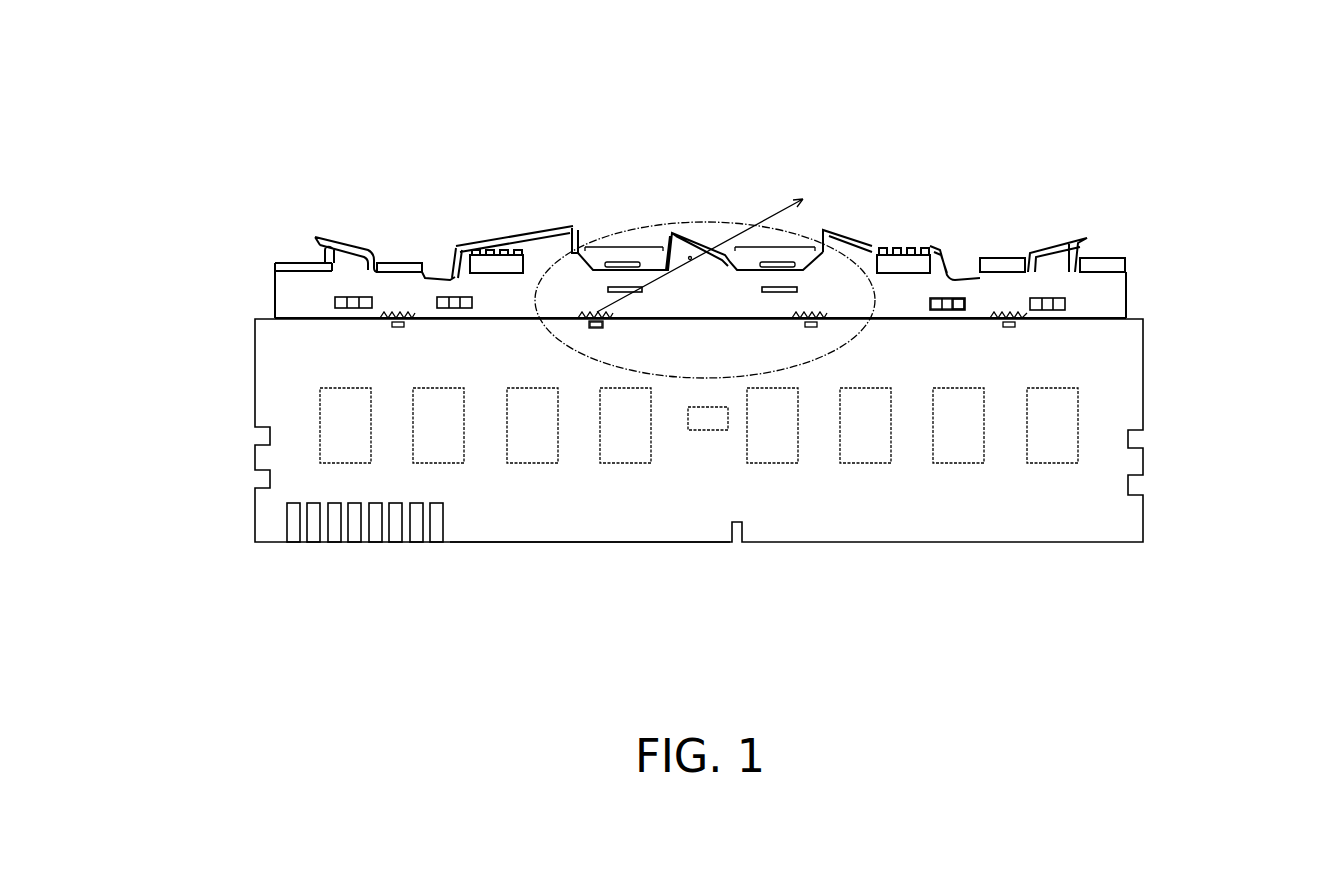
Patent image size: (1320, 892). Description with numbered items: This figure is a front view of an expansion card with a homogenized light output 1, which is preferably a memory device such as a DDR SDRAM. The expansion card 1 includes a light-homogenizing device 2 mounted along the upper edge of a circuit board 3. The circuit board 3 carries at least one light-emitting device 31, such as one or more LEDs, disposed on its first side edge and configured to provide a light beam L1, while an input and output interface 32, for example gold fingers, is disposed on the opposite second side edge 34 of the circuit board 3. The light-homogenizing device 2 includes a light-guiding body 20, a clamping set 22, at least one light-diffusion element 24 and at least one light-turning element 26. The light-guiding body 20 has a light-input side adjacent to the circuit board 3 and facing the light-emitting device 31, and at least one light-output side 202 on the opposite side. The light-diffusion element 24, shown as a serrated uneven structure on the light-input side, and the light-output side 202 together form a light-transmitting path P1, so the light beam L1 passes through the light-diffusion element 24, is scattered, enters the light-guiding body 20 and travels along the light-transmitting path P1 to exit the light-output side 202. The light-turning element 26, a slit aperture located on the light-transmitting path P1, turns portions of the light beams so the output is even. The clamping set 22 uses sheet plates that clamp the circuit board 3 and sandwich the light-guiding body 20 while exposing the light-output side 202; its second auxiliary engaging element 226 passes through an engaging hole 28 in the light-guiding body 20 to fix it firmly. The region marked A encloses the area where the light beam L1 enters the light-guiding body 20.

The expansion card with a homogenized light output 1 is at (1229, 140).
The light-homogenizing device 2 is at (190, 228).
The circuit board 3 is at (1128, 378).
The light-guiding body 20 is at (1115, 305).
The clamping set 22 is at (1115, 270).
The light-diffusion element 24 is at (583, 313).
The light-turning element 26 is at (620, 286).
The engaging hole 28 is at (960, 298).
The light-emitting device 31 is at (591, 316).
The input and output interface 32 is at (293, 527).
The second side edge 34 is at (563, 545).
The light-output side 202 is at (690, 242).
The second auxiliary engaging element 226 is at (937, 298).
The enlarged region A is at (857, 250).
The light-transmitting path P1 is at (690, 258).
The light beam L1 is at (718, 247).